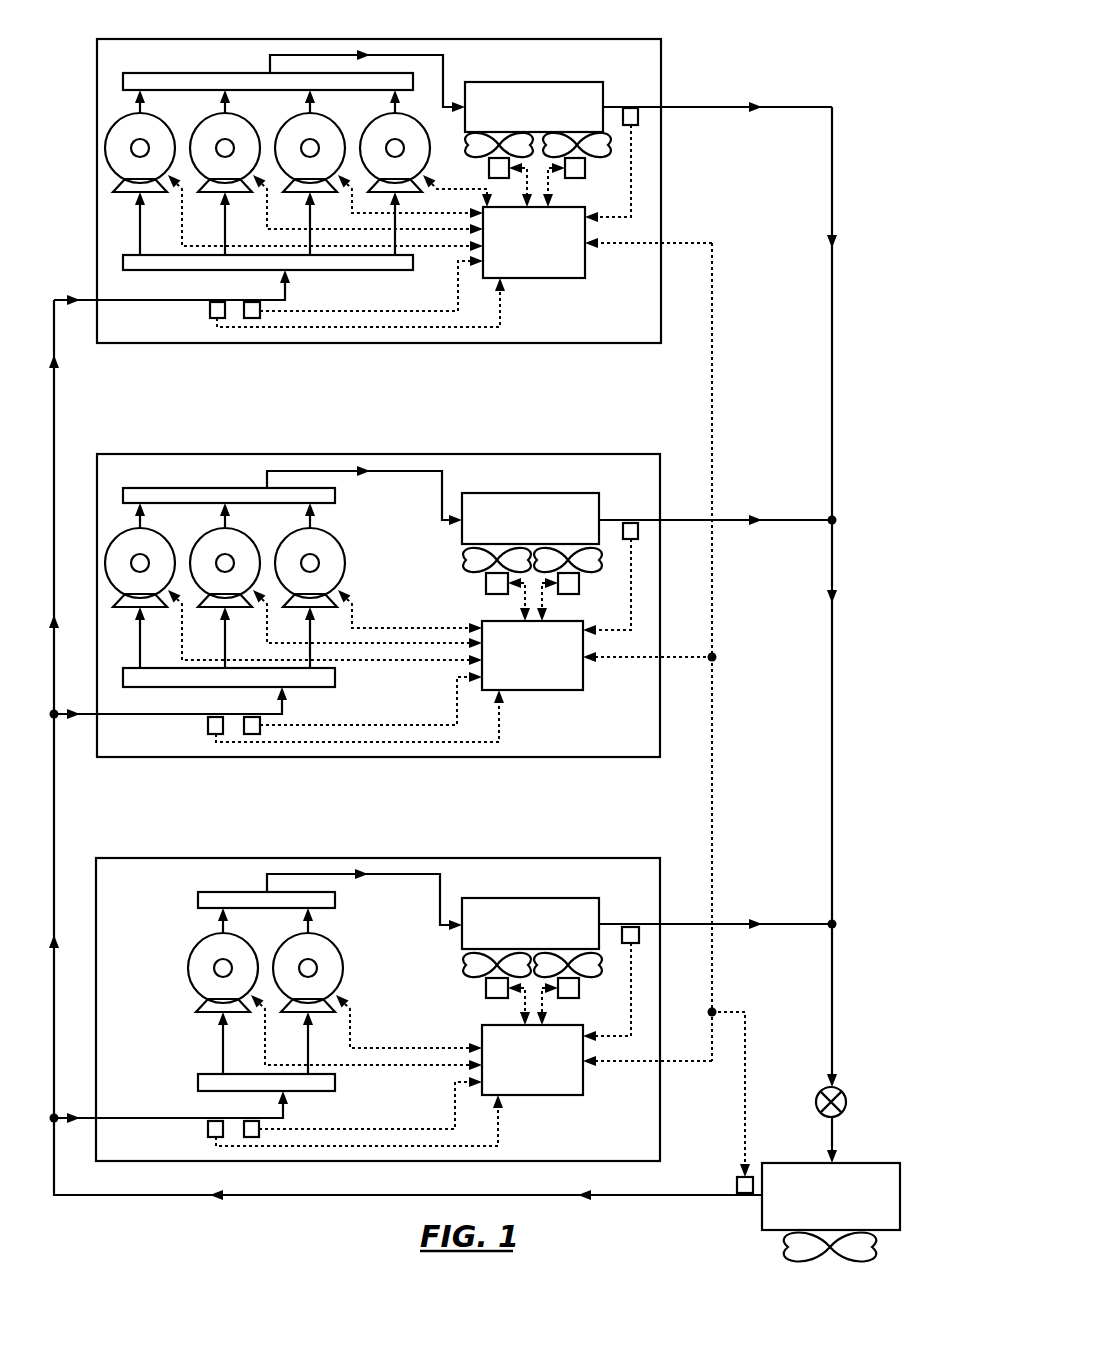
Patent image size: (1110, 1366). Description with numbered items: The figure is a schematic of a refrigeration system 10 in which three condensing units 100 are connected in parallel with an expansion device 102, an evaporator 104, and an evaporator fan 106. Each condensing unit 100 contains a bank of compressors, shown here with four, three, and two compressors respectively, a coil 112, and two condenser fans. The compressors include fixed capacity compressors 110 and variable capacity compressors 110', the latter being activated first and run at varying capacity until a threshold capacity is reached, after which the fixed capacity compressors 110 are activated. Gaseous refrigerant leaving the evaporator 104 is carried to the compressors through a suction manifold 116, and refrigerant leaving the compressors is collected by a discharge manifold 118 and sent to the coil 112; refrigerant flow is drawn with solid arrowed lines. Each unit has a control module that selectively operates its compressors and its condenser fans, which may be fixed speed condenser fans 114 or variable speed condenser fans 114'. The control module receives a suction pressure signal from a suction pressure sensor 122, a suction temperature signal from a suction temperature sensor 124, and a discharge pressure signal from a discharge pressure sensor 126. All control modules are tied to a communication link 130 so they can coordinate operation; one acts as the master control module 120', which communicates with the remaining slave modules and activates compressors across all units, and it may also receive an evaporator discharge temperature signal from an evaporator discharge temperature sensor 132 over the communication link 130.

The refrigeration system 10 is at (760, 33).
The condensing unit 100 is at (555, 343).
The expansion device 102 is at (846, 1095).
The evaporator 104 is at (762, 1218).
The evaporator fan 106 is at (800, 1258).
The compressor 110 is at (246, 552).
The variable capacity compressor 110' is at (152, 360).
The coil 112 is at (520, 82).
The condenser fan 114 is at (523, 780).
The variable speed condenser fan 114' is at (522, 364).
The suction manifold 116 is at (175, 271).
The discharge manifold 118 is at (190, 73).
The master control module 120' is at (555, 669).
The suction pressure sensor 122 is at (208, 310).
The suction temperature sensor 124 is at (252, 318).
The discharge pressure sensor 126 is at (638, 112).
The communication link 130 is at (712, 318).
The evaporator discharge temperature sensor 132 is at (735, 1182).